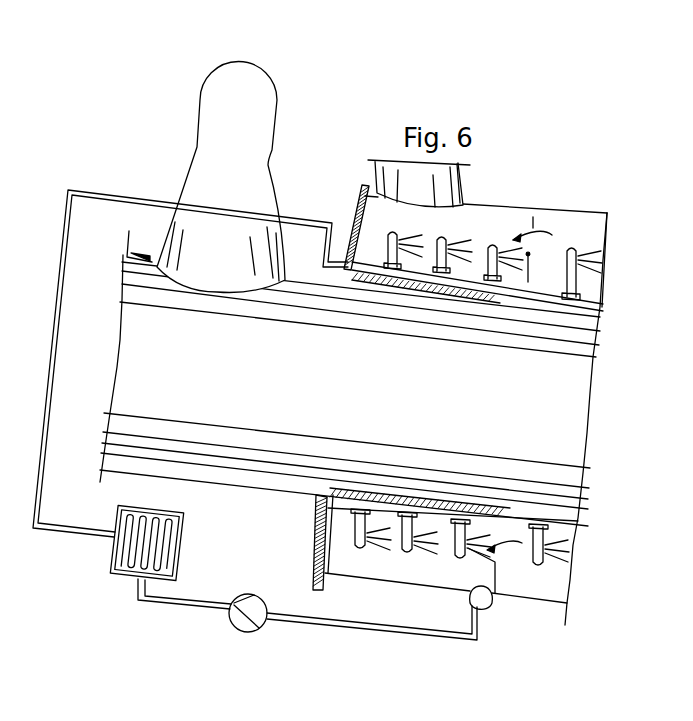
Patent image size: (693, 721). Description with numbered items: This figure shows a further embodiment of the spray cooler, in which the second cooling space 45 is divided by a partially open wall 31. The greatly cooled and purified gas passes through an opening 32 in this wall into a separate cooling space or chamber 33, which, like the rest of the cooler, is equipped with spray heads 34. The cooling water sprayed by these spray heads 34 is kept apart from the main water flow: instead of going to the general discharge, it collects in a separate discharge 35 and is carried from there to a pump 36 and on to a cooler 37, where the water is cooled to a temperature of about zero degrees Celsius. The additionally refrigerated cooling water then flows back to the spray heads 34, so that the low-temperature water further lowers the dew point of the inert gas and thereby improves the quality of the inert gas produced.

The partially open wall 31 is at (543, 258).
The opening 32 is at (536, 229).
The separate cooling space or chamber 33 is at (470, 220).
The spray heads 34 is at (497, 246).
The separate discharge 35 is at (487, 610).
The pump 36 is at (263, 623).
The cooler 37 is at (177, 537).
The second cooling space 45 is at (587, 227).